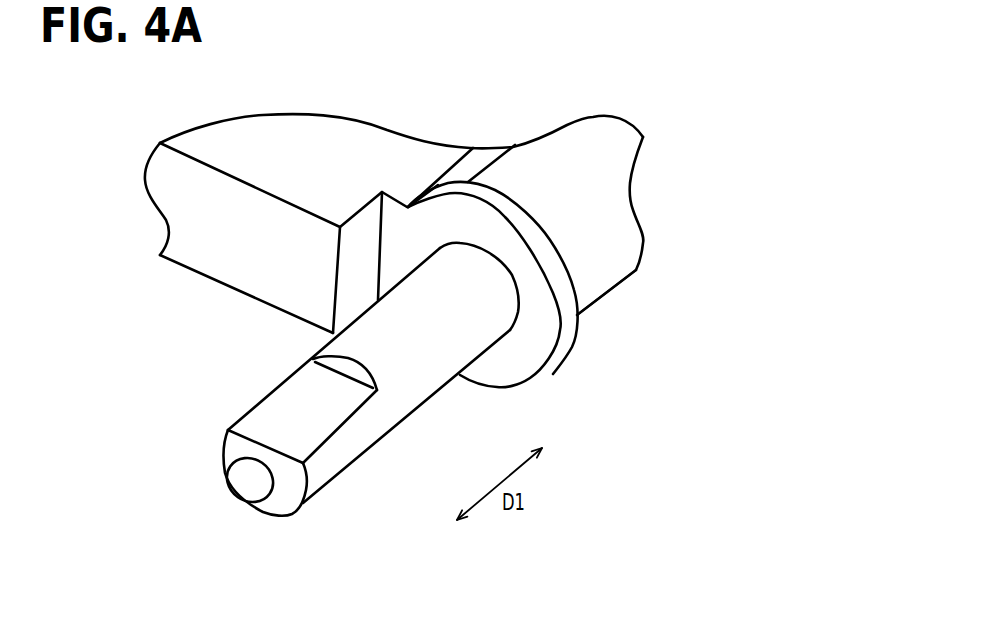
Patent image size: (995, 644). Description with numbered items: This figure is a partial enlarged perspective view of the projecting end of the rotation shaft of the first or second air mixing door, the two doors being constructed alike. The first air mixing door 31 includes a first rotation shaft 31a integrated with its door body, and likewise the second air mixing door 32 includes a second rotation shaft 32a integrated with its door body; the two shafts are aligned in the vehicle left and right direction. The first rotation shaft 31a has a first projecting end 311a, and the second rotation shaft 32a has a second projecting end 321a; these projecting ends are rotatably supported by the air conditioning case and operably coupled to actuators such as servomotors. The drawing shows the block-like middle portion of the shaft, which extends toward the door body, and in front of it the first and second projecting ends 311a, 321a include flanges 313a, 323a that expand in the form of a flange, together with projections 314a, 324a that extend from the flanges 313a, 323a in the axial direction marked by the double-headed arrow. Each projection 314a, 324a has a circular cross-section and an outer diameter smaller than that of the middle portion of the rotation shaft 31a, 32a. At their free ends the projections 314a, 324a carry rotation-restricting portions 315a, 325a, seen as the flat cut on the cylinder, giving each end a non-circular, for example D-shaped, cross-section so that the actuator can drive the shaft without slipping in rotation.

The first air mixing door 31 is at (436, 232).
The second air mixing door 32 is at (436, 232).
The first rotation shaft 31a is at (467, 223).
The second rotation shaft 32a is at (612, 290).
The first projecting end 311a is at (680, 352).
The second projecting end 321a is at (580, 315).
The flange 313a is at (569, 328).
The flange 323a is at (560, 357).
The projection 314a is at (298, 417).
The projection 324a is at (298, 417).
The rotation-restricting portion 315a is at (298, 379).
The rotation-restricting portion 325a is at (287, 382).